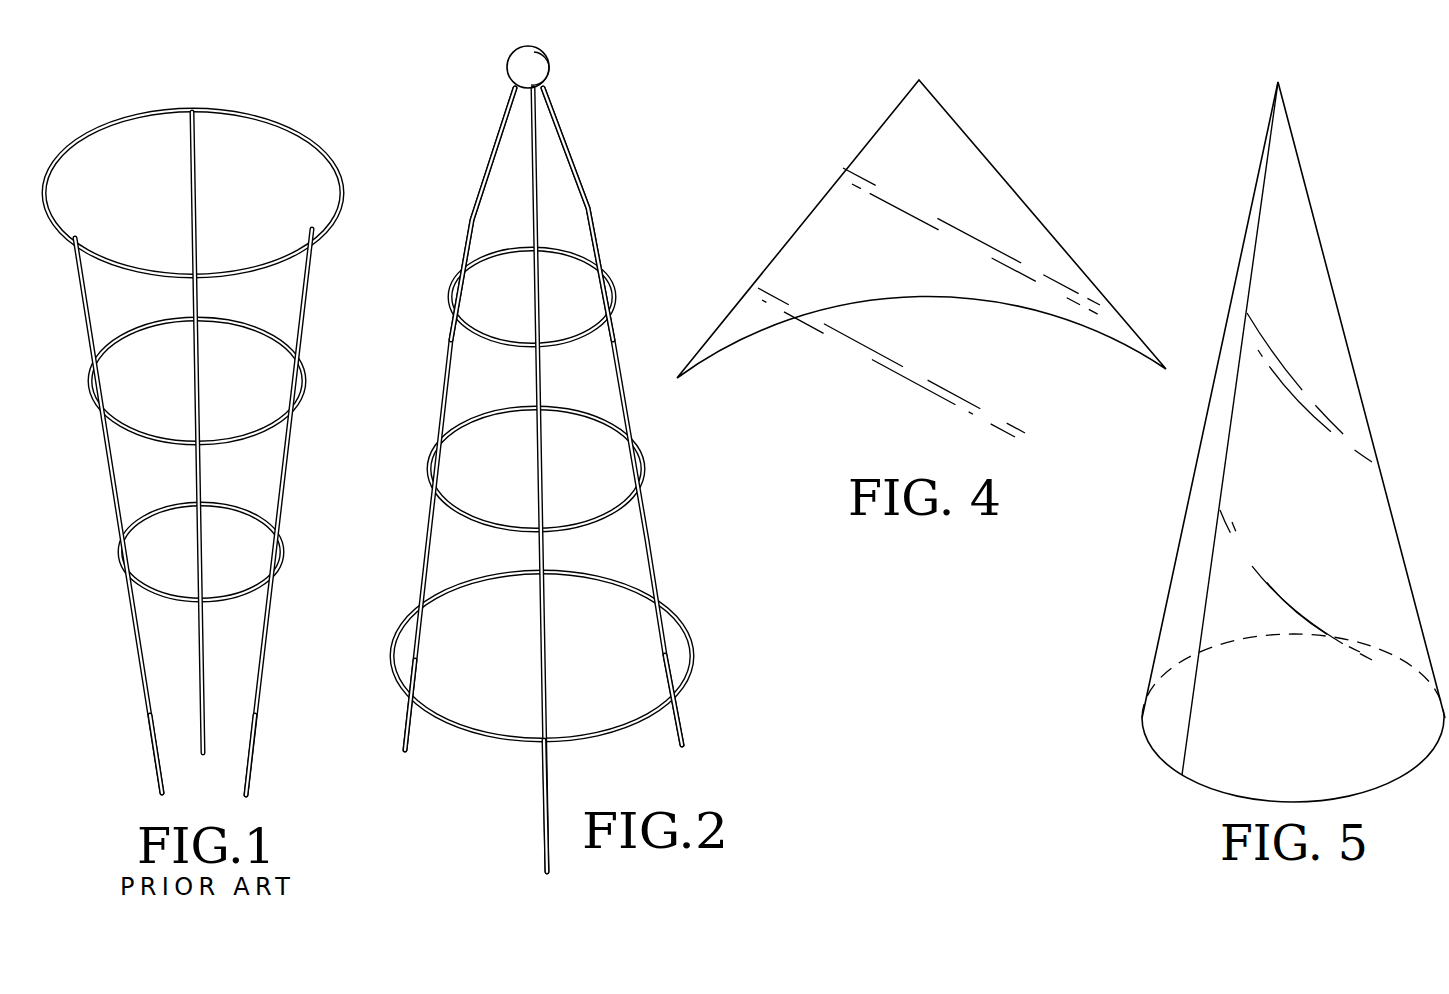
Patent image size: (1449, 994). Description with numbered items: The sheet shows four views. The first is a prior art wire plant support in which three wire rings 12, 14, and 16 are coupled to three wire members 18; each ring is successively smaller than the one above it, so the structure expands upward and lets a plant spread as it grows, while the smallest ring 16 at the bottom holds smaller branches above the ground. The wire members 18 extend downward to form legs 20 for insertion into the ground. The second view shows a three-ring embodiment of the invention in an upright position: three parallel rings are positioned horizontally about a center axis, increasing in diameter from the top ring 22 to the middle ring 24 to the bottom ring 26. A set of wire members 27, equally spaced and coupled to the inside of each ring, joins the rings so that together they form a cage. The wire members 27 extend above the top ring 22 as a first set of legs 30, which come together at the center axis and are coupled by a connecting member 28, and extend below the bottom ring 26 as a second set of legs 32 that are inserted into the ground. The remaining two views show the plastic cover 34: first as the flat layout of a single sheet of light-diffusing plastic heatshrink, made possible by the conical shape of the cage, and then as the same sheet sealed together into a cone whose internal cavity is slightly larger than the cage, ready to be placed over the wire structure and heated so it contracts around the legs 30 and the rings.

In FIG. 1, the wire ring 12 is at (77, 144).
In FIG. 1, the wire ring 14 is at (93, 388).
In FIG. 1, the wire ring 16 is at (124, 568).
In FIG. 1, the wire member 18 is at (197, 183).
In FIG. 1, the leg 20 is at (197, 718).
In FIG. 2, the top ring 22 is at (614, 289).
In FIG. 2, the middle ring 24 is at (645, 466).
In FIG. 2, the bottom ring 26 is at (689, 638).
In FIG. 2, the wire member 27 is at (658, 576).
In FIG. 2, the connecting member 28 is at (552, 58).
In FIG. 2, the first set of legs 30 is at (529, 167).
In FIG. 2, the second set of legs 32 is at (543, 770).
In FIG. 4, the plastic cover 34 is at (1114, 303).
In FIG. 5, the plastic cover 34 is at (1362, 383).